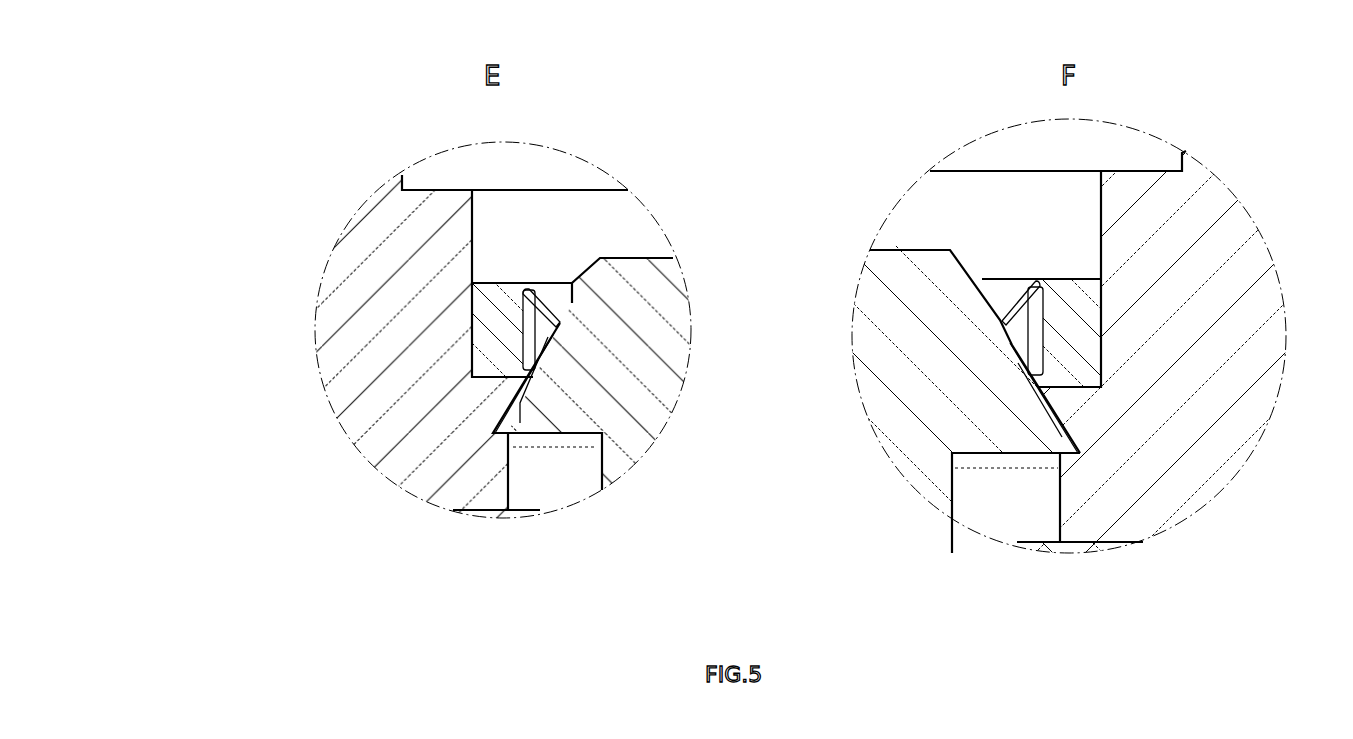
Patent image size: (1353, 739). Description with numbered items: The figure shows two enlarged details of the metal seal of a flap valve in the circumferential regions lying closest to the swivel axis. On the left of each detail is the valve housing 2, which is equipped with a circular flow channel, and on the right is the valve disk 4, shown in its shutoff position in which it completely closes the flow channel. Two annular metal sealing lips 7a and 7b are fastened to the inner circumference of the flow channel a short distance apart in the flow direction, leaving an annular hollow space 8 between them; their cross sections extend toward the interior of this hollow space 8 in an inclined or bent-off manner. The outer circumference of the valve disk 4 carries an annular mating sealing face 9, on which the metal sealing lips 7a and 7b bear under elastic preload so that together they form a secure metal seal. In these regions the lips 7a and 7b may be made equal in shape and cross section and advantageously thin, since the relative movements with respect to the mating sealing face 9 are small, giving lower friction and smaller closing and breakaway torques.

The valve housing 2 is at (735, 355).
The valve disk 4 is at (798, 400).
The metal sealing lip 7a is at (781, 218).
The metal sealing lip 7b is at (641, 479).
The annular hollow space 8 is at (648, 399).
The mating sealing face 9 is at (786, 342).